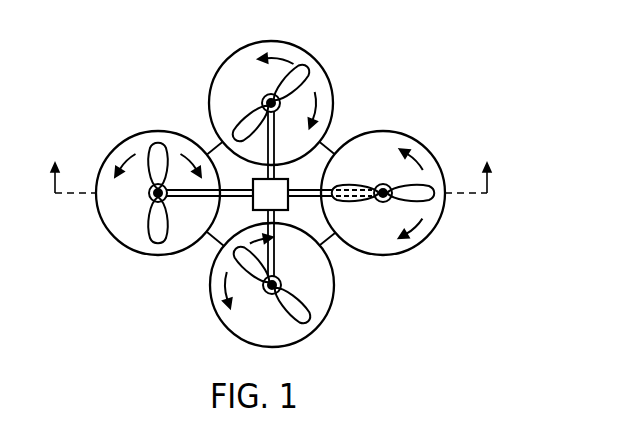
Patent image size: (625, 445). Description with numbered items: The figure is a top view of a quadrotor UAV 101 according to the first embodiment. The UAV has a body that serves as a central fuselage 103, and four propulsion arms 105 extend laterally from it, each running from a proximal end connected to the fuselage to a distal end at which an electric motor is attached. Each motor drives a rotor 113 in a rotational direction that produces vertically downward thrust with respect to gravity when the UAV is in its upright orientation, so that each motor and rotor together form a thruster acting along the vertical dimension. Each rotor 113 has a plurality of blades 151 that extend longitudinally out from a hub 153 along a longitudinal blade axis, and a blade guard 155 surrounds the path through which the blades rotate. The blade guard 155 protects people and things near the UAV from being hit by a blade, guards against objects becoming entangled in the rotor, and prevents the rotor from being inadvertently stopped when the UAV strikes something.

The UAV 101 is at (93, 88).
The central fuselage 103 is at (275, 198).
The propulsion arm 105 is at (197, 196).
The rotor 113 is at (158, 233).
The blade 151 is at (244, 131).
The hub 153 is at (380, 188).
The blade guard 155 is at (334, 101).